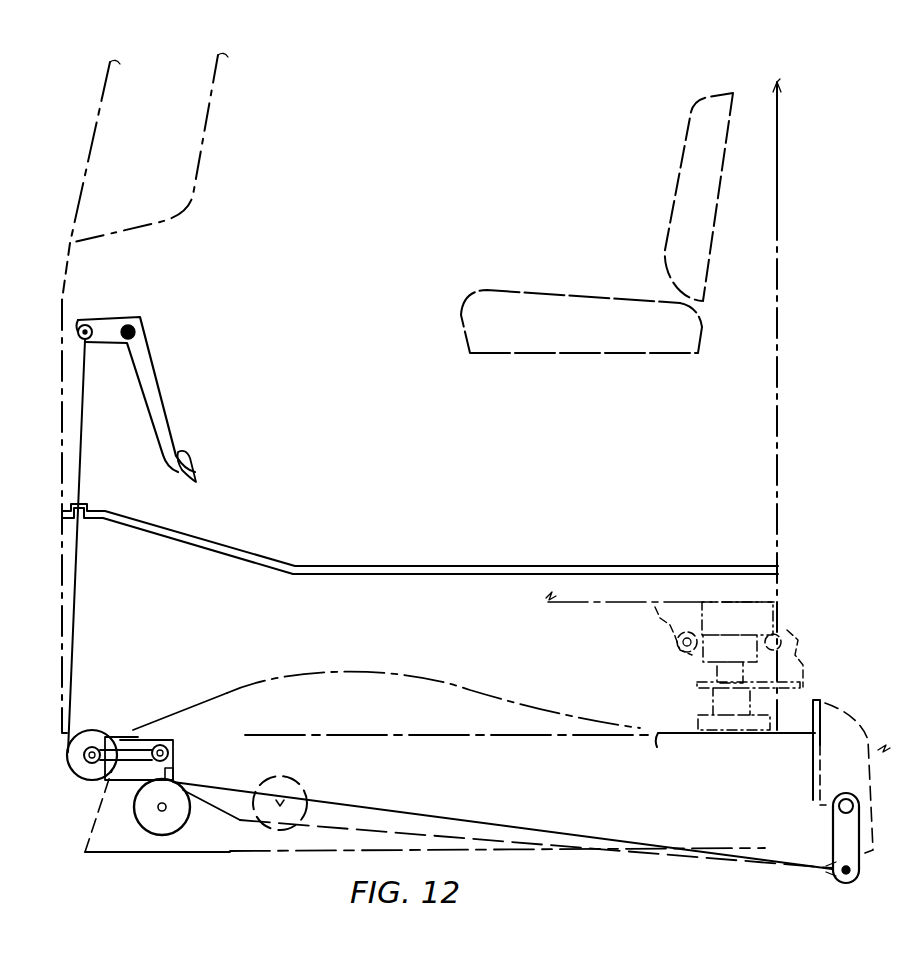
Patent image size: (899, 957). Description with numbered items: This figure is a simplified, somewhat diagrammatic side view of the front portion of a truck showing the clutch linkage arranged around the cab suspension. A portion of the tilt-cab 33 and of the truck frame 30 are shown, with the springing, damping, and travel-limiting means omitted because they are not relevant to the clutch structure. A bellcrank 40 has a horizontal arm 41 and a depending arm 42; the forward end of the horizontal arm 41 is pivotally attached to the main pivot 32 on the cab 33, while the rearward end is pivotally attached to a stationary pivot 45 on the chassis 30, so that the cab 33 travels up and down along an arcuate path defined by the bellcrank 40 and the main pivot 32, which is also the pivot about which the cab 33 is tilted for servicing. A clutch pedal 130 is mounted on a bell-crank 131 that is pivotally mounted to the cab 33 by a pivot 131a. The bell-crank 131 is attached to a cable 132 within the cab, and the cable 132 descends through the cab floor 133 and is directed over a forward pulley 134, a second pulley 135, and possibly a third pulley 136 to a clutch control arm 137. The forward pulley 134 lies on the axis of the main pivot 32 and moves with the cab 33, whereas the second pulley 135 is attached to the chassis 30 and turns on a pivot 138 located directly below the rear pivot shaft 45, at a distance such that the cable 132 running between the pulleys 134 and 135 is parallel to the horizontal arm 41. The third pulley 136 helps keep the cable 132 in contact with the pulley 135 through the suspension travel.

The truck frame 30 is at (663, 750).
The main pivot pin 32 is at (85, 778).
The cab 33 is at (758, 360).
The bellcrank 40 is at (160, 745).
The horizontal arm 41 is at (134, 737).
The depending arm 42 is at (174, 776).
The stationary pivot 45 is at (178, 746).
The clutch pedal 130 is at (191, 467).
The bell-crank 131 is at (146, 367).
The pivot 131a is at (140, 317).
The cable 132 is at (85, 458).
The cab floor 133 is at (234, 542).
The forward pulley 134 is at (72, 765).
The second pulley 135 is at (155, 828).
The third pulley 136 is at (286, 778).
The clutch control arm 137 is at (840, 822).
The pivot 138 is at (158, 808).